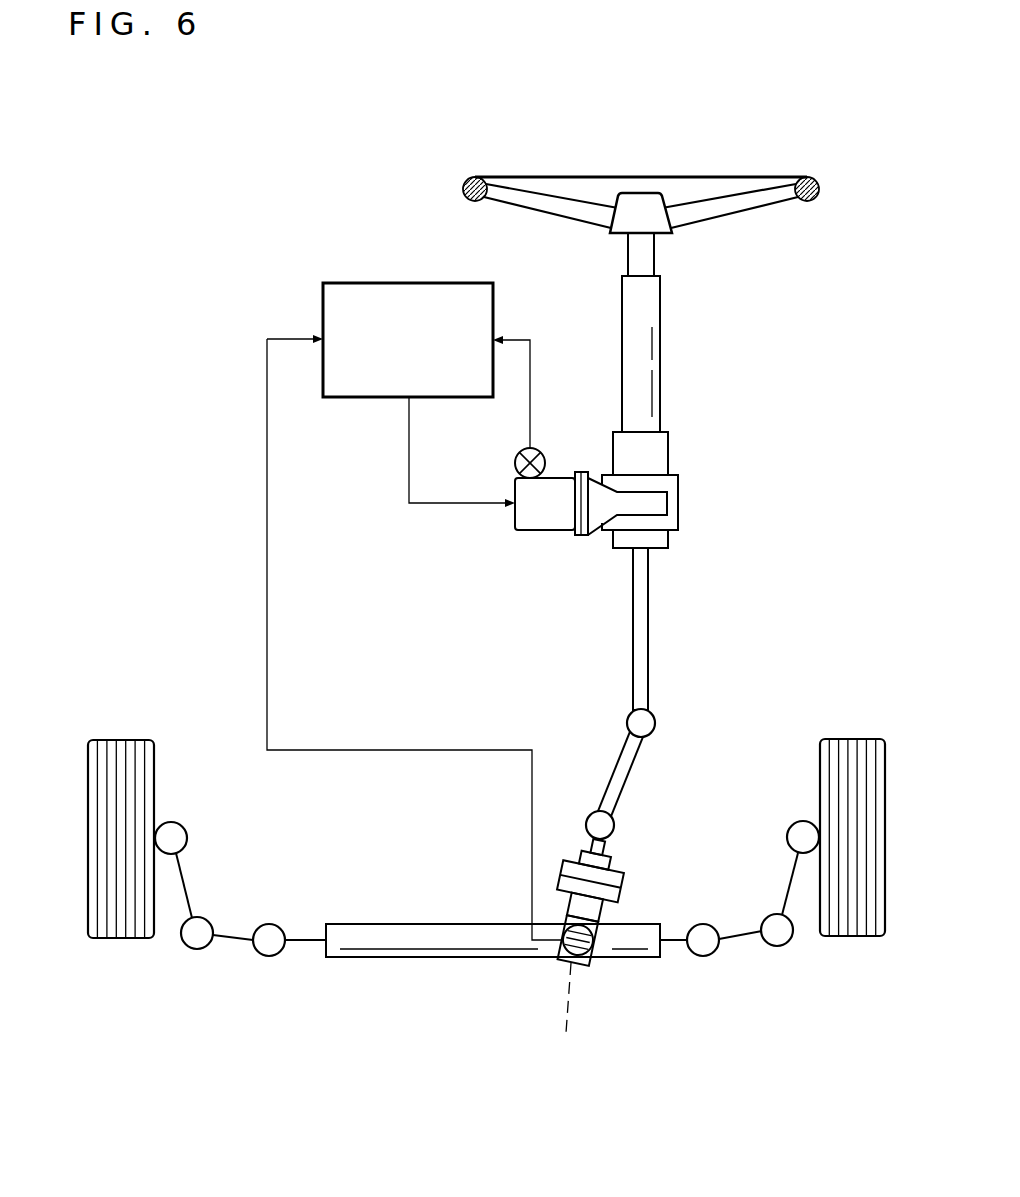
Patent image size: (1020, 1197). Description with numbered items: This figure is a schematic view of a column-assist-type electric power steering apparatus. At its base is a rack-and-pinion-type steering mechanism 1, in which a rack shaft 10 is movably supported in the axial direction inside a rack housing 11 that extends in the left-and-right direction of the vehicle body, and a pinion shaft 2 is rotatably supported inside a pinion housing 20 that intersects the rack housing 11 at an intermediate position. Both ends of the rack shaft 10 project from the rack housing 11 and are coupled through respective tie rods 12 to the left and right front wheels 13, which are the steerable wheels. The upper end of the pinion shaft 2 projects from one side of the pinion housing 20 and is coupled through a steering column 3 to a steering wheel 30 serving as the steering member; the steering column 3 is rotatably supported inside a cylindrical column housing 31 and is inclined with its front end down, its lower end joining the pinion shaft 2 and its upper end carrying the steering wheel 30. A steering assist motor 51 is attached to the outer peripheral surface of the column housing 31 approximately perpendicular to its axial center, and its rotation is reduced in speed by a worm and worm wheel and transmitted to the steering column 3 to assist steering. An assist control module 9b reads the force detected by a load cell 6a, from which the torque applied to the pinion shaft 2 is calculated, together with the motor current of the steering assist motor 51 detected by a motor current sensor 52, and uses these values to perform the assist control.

The rack-and-pinion-type steering mechanism 1 is at (490, 855).
The pinion shaft 2 is at (603, 843).
The steering column 3 is at (650, 258).
The load cell 6a is at (579, 1022).
The assist control module 9b is at (322, 306).
The rack shaft 10 is at (308, 942).
The rack housing 11 is at (413, 925).
The tie rod 12 is at (232, 944).
The front wheel 13 is at (117, 738).
The pinion housing 20 is at (600, 912).
The steering wheel 30 is at (462, 188).
The column housing 31 is at (662, 367).
The steering assist motor 51 is at (540, 538).
The motor current sensor 52 is at (517, 459).